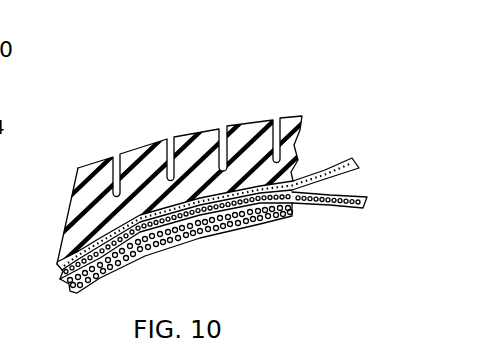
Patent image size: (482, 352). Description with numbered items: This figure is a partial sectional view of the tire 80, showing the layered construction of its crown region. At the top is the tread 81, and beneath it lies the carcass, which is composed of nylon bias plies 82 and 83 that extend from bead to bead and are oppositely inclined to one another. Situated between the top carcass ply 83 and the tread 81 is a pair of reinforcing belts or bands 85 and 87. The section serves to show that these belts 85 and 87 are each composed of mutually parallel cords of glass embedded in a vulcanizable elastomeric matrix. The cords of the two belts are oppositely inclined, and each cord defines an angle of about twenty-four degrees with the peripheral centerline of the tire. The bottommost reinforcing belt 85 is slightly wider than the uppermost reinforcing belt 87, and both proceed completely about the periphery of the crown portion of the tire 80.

The tire 80 is at (319, 97).
The tread 81 is at (248, 123).
The nylon bias ply 82 is at (103, 276).
The top carcass ply 83 is at (100, 252).
The bottommost reinforcing belt 85 is at (338, 206).
The uppermost reinforcing belt 87 is at (341, 152).